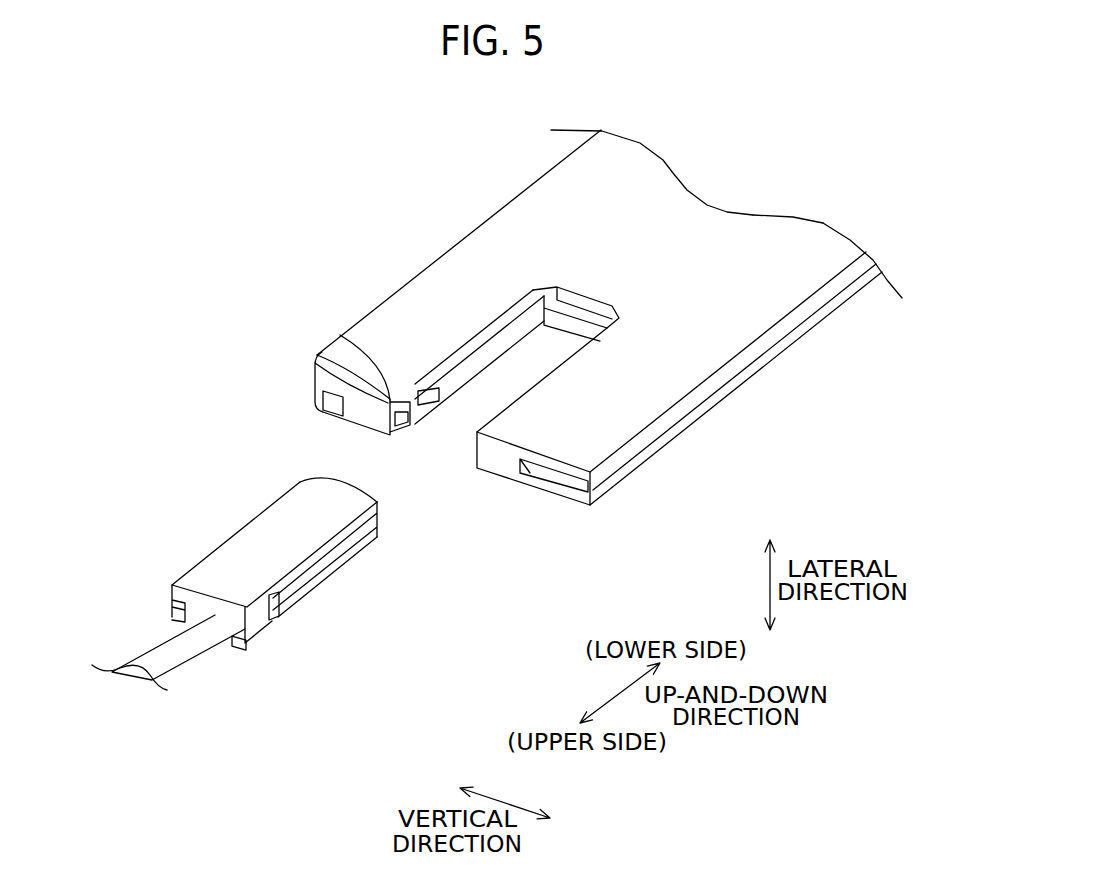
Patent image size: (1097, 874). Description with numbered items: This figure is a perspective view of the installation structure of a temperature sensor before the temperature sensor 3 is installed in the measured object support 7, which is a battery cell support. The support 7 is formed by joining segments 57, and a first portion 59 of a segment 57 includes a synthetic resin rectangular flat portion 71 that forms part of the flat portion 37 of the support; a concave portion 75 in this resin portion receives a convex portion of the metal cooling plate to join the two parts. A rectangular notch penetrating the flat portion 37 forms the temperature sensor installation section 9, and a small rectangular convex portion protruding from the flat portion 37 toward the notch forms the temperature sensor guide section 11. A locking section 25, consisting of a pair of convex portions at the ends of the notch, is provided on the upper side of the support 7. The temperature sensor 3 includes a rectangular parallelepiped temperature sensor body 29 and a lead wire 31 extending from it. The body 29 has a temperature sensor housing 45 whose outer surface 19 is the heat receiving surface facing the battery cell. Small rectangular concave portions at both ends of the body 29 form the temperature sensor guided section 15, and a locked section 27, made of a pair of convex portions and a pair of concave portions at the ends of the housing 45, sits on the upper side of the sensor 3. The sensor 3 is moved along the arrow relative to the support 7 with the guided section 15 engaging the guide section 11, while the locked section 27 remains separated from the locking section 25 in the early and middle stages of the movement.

The measured object support 7 is at (482, 225).
The segment 57 is at (548, 192).
The first portion 59 is at (623, 152).
The synthetic resin rectangular flat portion 71 is at (700, 218).
The flat portion 37 is at (808, 243).
The concave portion 75 is at (562, 482).
The temperature sensor installation section 9 is at (523, 353).
The temperature sensor guide section 11 is at (462, 363).
The locking section 25 is at (325, 350).
The temperature sensor body 29 is at (203, 572).
The temperature sensor housing 45 is at (302, 487).
The temperature sensor 3 is at (240, 545).
The outer surface 19 is at (317, 533).
The temperature sensor guided section 15 is at (318, 577).
The locked section 27 is at (278, 624).
The lead wire 31 is at (147, 650).